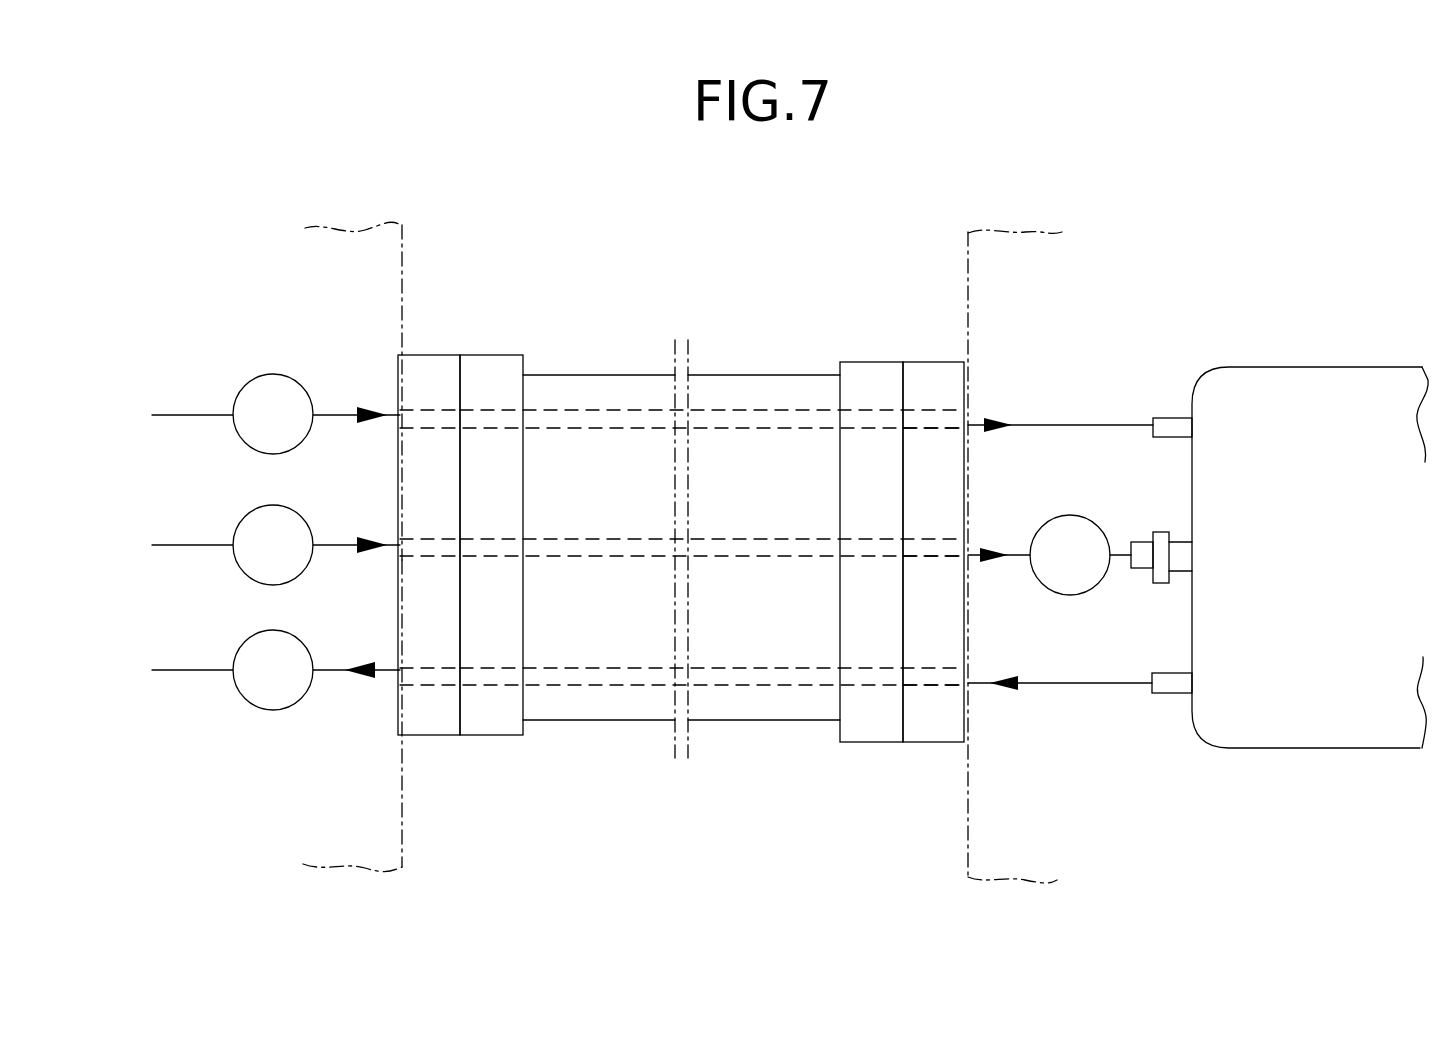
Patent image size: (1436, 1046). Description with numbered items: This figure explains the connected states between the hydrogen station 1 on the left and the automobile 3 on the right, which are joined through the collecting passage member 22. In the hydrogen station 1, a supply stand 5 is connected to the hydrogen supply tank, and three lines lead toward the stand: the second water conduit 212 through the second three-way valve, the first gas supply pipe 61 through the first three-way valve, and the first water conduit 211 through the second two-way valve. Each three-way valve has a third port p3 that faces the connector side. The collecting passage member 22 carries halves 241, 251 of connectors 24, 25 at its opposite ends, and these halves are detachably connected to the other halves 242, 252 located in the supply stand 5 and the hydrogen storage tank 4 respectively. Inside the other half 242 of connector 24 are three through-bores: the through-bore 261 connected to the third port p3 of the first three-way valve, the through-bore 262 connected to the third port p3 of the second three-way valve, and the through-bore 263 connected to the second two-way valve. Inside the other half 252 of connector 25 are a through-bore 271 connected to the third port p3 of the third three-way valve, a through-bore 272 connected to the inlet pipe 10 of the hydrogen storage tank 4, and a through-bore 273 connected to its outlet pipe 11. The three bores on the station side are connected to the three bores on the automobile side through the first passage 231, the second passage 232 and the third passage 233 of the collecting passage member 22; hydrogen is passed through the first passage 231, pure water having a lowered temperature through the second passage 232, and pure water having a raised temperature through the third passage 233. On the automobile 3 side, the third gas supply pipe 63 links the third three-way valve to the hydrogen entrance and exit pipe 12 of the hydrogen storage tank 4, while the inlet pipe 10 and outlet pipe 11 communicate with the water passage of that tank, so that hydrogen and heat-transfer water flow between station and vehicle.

The hydrogen station 1 is at (410, 239).
The automobile 3 is at (955, 267).
The hydrogen storage tank 4 is at (1365, 357).
The supply stand 5 is at (403, 297).
The inlet pipe 10 is at (1170, 426).
The outlet pipe 11 is at (1170, 680).
The hydrogen entrance and exit pipe 12 is at (1142, 550).
The collecting passage member 22 is at (734, 366).
The connector 24 is at (449, 591).
The connector 25 is at (926, 595).
The first gas supply pipe 61 is at (178, 545).
The third gas supply pipe 63 is at (1122, 548).
The third port p3 is at (315, 413).
The first water conduit 211 is at (178, 670).
The second water conduit 212 is at (178, 413).
The first passage 231 is at (572, 543).
The second passage 232 is at (590, 415).
The third passage 233 is at (563, 673).
The half of connector 241 is at (513, 590).
The other half of connector 242 is at (405, 566).
The half of connector 251 is at (867, 733).
The other half of connector 252 is at (956, 573).
The through-bore 261 is at (428, 543).
The through-bore 262 is at (423, 415).
The through-bore 263 is at (428, 670).
The through-bore 271 is at (940, 528).
The through-bore 272 is at (932, 420).
The through-bore 273 is at (940, 700).